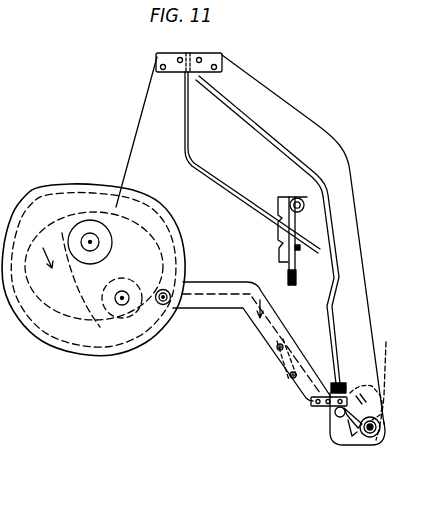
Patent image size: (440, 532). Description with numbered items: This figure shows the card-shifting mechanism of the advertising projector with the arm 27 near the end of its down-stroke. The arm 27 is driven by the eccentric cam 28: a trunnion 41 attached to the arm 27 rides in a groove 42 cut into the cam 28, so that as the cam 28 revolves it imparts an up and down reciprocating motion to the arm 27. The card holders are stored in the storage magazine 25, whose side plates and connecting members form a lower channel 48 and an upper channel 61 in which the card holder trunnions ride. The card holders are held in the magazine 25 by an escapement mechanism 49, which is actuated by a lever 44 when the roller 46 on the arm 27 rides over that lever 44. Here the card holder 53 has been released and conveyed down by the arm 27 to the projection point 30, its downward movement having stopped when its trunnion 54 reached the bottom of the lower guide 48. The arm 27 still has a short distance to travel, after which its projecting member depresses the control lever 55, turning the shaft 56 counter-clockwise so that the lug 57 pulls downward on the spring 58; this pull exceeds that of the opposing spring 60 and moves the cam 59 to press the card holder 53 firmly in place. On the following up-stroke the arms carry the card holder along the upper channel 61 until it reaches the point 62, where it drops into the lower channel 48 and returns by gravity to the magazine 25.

The storage magazine 25 is at (252, 162).
The arm 27 is at (196, 281).
The eccentric cam 28 is at (138, 237).
The projection point 30 is at (340, 397).
The trunnion 41 is at (171, 310).
The groove 42 is at (75, 335).
The lever 44 is at (289, 273).
The roller 46 is at (283, 371).
The lower channel 48 is at (253, 214).
The escapement mechanism 49 is at (301, 200).
The card holder 53 is at (340, 384).
The trunnion 54 is at (343, 387).
The control lever 55 is at (338, 413).
The shaft 56 is at (371, 437).
The lug 57 is at (355, 443).
The spring 58 is at (366, 394).
The cam 59 is at (352, 418).
The spring 60 is at (384, 382).
The upper channel 61 is at (314, 124).
The point 62 is at (190, 81).